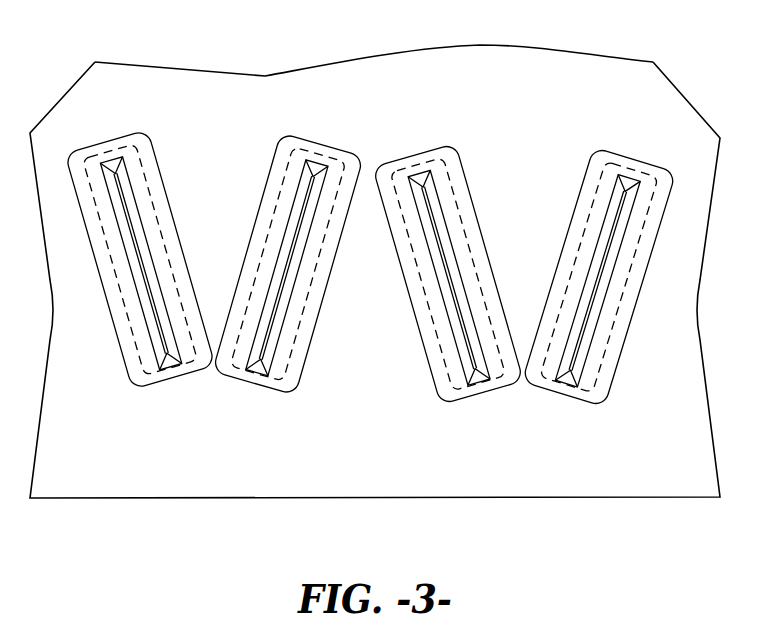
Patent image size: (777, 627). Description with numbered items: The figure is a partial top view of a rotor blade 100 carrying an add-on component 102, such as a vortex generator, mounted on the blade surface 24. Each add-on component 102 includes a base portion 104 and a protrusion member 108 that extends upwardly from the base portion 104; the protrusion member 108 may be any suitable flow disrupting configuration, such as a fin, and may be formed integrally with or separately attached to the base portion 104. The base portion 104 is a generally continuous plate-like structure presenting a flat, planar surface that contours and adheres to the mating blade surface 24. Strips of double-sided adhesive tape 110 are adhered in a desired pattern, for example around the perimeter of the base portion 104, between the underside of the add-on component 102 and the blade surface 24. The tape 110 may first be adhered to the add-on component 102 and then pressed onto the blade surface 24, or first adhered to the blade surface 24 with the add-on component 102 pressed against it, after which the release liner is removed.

The blade surface 24 is at (198, 88).
The pocketed panel section 100 is at (375, 257).
The add-on component 102 is at (373, 275).
The base portion 104 is at (148, 372).
The protrusion member 108 is at (290, 228).
The double-sided adhesive tape 110 is at (148, 175).